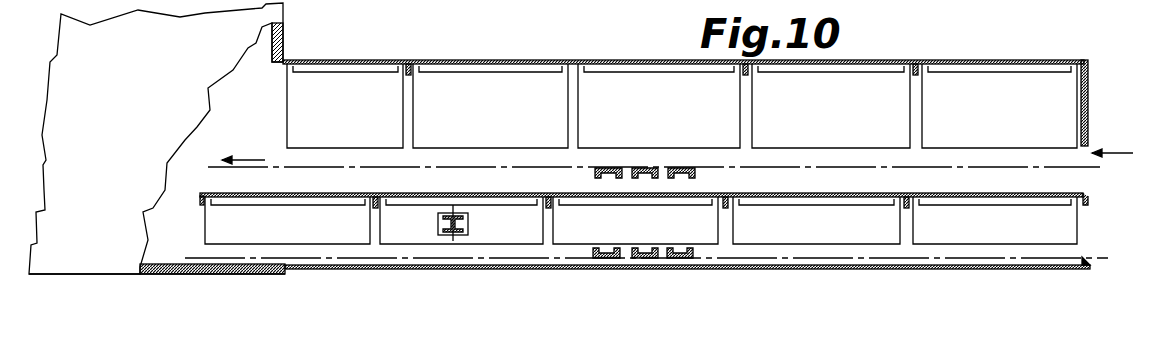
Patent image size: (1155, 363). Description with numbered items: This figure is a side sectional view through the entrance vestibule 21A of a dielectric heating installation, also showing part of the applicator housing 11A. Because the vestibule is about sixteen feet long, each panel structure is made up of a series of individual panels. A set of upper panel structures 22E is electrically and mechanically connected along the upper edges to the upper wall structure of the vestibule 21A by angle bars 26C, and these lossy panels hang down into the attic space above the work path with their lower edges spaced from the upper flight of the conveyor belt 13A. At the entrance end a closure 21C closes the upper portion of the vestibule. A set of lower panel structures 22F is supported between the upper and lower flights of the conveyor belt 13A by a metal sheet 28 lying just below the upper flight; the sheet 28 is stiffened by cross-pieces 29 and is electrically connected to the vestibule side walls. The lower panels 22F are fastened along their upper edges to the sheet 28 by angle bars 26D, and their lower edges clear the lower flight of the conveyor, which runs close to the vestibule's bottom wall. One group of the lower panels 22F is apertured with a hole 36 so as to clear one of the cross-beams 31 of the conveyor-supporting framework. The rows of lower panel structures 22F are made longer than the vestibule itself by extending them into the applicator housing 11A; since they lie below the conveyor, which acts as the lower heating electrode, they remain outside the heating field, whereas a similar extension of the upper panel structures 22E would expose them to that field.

The applicator housing 11A is at (100, 258).
The entrance vestibule 21A is at (983, 12).
The closure 21C is at (1088, 108).
The upper panel structures 22E is at (342, 100).
The angle bars 26C is at (398, 70).
The conveyor belt 13A is at (700, 166).
The metal sheet 28 is at (410, 193).
The cross-pieces 29 is at (1087, 201).
The lower panel structures 22F is at (313, 228).
The angle bars 26D is at (874, 205).
The hole 36 is at (438, 222).
The cross-beams 31 is at (468, 222).